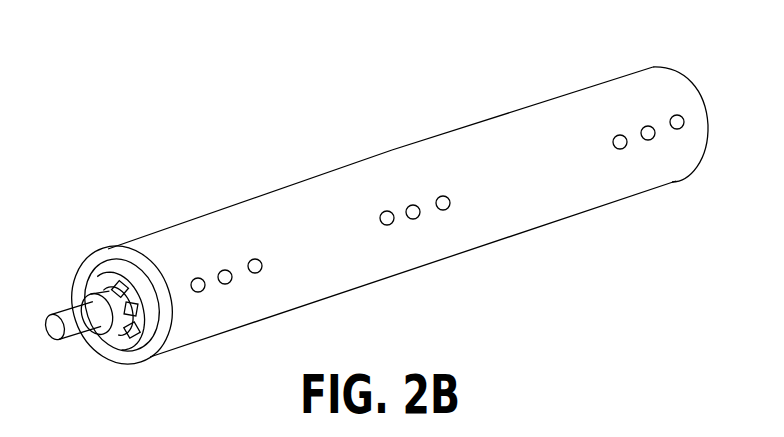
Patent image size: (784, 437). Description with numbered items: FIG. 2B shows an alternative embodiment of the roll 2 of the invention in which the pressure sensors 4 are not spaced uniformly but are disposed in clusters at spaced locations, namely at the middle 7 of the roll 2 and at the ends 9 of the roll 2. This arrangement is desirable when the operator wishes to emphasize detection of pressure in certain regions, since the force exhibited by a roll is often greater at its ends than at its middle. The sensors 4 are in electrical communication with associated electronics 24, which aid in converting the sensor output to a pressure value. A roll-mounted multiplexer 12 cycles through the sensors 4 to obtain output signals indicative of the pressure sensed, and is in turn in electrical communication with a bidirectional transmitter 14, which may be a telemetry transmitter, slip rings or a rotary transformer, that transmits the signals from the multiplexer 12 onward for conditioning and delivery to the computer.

The roll 2 is at (227, 208).
The sensors 4 is at (260, 272).
The middle of the roll 7 is at (392, 150).
The ends of the roll 9 is at (678, 72).
The roll-mounted multiplexer 12 is at (160, 280).
The bidirectional transmitter 14 is at (101, 281).
The associated electronics 24 is at (110, 357).